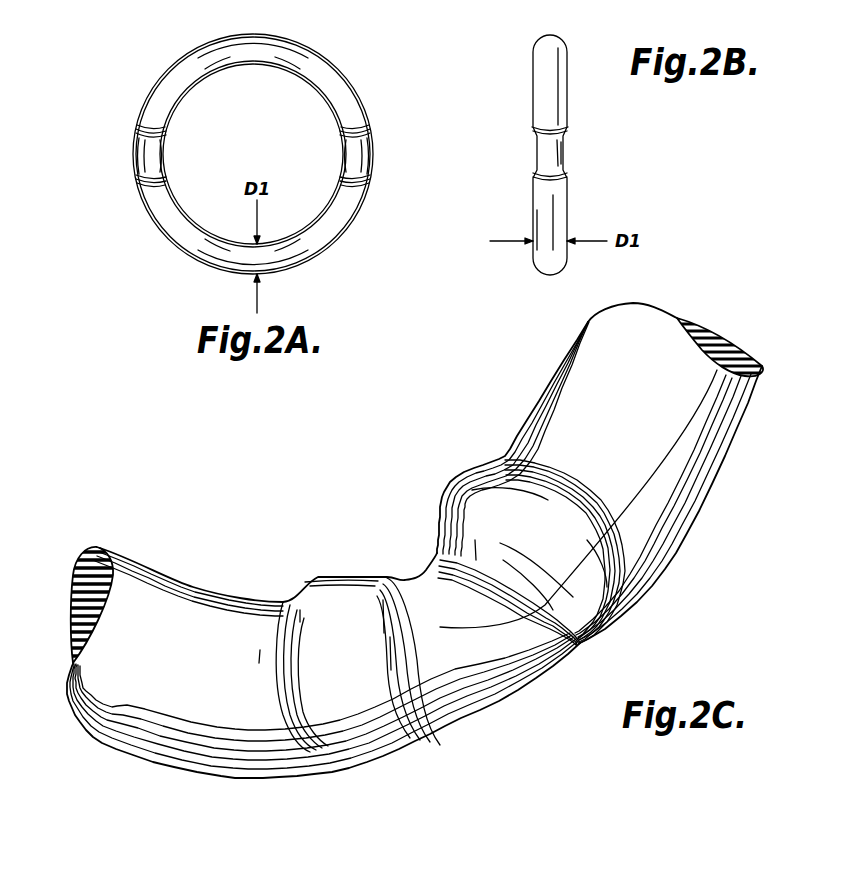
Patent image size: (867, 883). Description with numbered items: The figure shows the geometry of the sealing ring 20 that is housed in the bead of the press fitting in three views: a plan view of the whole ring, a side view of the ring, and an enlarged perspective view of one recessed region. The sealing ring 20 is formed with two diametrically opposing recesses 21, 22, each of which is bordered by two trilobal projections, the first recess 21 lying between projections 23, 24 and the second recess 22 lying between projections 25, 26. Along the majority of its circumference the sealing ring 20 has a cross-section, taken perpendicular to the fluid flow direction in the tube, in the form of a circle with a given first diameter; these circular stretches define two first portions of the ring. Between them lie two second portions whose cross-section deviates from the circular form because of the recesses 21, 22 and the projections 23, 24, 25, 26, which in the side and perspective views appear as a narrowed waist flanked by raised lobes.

In FIG. 2A, the sealing ring 20 is at (335, 61).
In FIG. 2B, the sealing ring 20 is at (530, 86).
In FIG. 2C, the sealing ring 20 is at (168, 582).
In FIG. 2A, the recess 21 is at (137, 155).
In FIG. 2B, the recess 21 is at (566, 153).
In FIG. 2C, the recess 21 is at (413, 568).
In FIG. 2A, the recess 22 is at (373, 155).
In FIG. 2A, the trilobal projection 23 is at (134, 131).
In FIG. 2B, the trilobal projection 23 is at (566, 130).
In FIG. 2C, the trilobal projection 23 is at (333, 575).
In FIG. 2A, the trilobal projection 24 is at (133, 178).
In FIG. 2B, the trilobal projection 24 is at (568, 176).
In FIG. 2C, the trilobal projection 24 is at (447, 512).
In FIG. 2A, the trilobal projection 25 is at (373, 131).
In FIG. 2A, the trilobal projection 26 is at (375, 177).